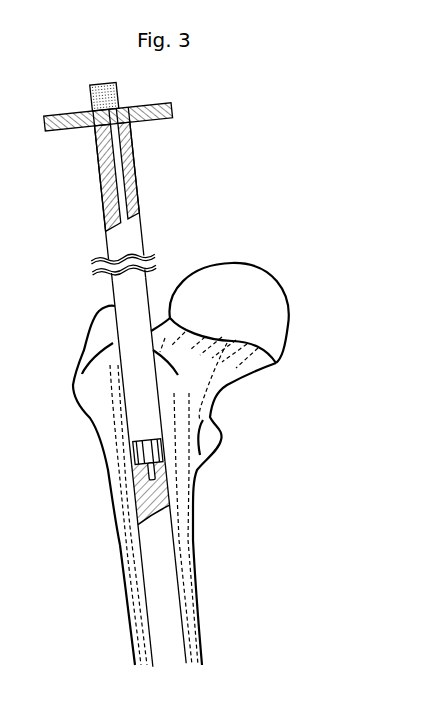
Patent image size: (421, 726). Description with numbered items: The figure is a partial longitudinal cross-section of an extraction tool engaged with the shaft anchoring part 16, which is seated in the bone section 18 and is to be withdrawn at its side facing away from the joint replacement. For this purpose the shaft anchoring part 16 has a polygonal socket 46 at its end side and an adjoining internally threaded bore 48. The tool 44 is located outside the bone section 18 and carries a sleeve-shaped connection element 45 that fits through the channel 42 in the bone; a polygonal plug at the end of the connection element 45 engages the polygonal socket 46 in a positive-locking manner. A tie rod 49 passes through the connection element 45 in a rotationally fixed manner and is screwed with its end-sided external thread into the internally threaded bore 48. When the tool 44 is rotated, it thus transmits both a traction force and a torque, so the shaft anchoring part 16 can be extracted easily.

The shaft anchoring part 16 is at (165, 597).
The bone section 18 is at (102, 395).
The channel 42 is at (114, 330).
The tool 44 is at (67, 109).
The connection element 45 is at (125, 245).
The polygonal socket 46 is at (138, 457).
The internally threaded bore 48 is at (140, 472).
The tie rod 49 is at (115, 172).